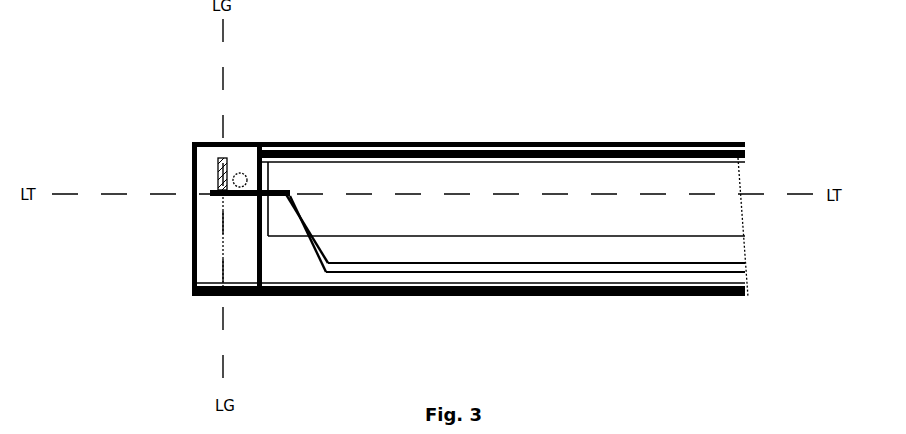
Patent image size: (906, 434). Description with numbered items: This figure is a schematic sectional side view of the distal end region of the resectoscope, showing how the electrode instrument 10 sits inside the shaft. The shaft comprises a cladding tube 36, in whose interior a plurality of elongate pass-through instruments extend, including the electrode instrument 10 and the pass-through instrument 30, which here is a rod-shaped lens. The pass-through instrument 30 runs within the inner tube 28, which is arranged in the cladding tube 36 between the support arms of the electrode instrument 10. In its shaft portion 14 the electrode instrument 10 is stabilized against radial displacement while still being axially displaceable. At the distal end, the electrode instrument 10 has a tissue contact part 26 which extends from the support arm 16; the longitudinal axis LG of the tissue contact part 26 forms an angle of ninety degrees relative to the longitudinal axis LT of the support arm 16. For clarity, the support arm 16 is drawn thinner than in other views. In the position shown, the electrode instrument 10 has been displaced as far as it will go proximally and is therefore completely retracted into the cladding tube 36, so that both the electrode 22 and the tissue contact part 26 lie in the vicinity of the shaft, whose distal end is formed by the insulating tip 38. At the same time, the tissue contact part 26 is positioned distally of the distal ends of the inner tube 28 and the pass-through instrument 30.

The electrode instrument 10 is at (654, 276).
The shaft portion 14 is at (525, 263).
The support arm 16 is at (257, 196).
The electrode 22 is at (190, 263).
The tissue contact part 26 is at (217, 178).
The inner tube 28 is at (715, 142).
The pass-through instrument 30 is at (742, 195).
The cladding tube 36 is at (625, 143).
The insulating tip 38 is at (233, 140).